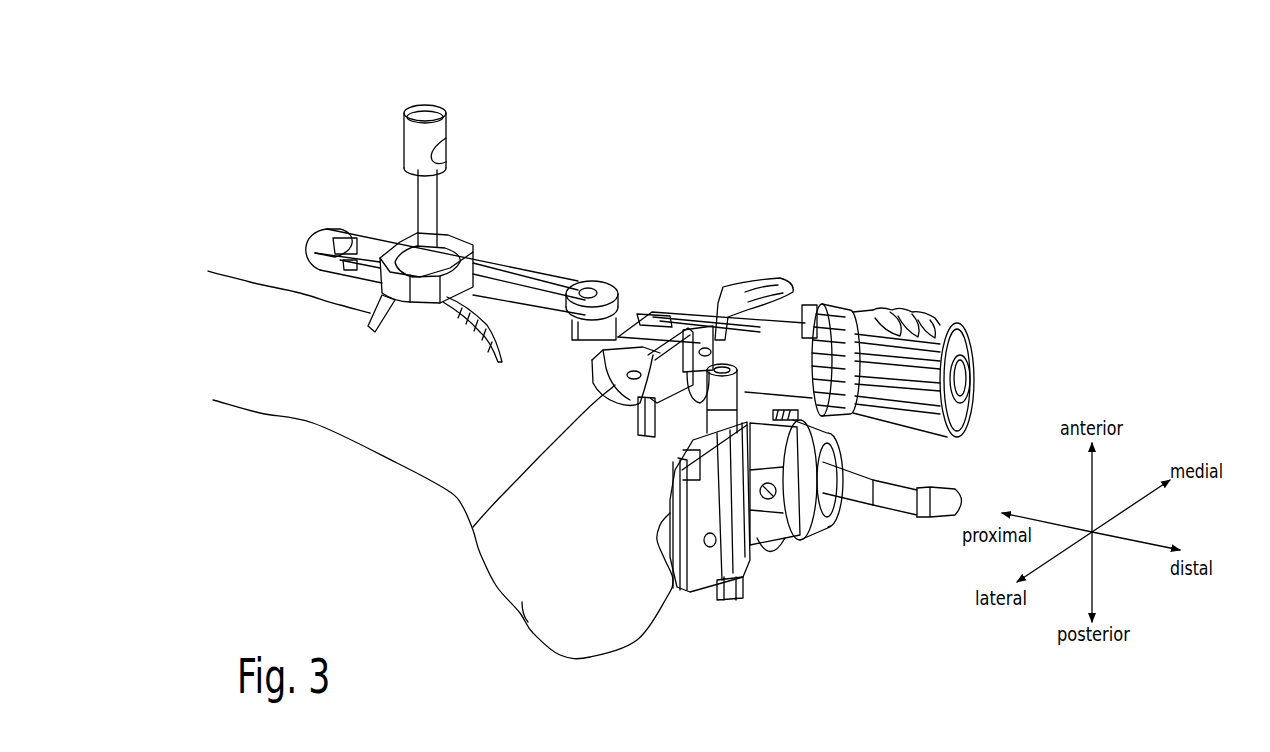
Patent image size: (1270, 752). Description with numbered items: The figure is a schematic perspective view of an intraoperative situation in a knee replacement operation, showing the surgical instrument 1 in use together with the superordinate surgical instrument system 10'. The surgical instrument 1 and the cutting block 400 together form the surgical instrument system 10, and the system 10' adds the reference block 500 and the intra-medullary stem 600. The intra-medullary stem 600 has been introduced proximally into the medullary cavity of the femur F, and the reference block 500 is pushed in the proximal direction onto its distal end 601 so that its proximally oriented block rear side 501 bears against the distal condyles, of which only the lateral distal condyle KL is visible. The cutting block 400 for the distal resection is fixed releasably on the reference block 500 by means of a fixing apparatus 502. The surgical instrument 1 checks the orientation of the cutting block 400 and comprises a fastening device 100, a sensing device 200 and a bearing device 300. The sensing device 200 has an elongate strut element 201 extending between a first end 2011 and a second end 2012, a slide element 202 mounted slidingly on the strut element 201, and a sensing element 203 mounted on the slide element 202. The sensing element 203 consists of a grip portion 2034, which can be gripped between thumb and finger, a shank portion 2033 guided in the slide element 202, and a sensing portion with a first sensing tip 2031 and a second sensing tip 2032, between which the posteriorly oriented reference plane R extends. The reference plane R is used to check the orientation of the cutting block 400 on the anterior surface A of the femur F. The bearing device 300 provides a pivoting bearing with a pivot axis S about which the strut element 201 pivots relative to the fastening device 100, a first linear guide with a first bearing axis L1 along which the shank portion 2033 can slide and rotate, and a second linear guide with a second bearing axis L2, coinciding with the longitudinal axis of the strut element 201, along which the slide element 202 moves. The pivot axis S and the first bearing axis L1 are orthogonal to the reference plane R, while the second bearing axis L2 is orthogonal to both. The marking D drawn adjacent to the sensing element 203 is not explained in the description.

The surgical instrument 1 is at (513, 197).
The surgical instrument system 10 is at (688, 175).
The surgical instrument system 10' is at (807, 106).
The fastening device 100 is at (643, 305).
The sensing device 200 is at (418, 261).
The strut element 201 is at (418, 249).
The slide element 202 is at (413, 243).
The sensing element 203 is at (430, 137).
The bearing device 300 is at (573, 263).
The cutting block 400 is at (473, 530).
The reference block 500 is at (756, 558).
The block rear side 501 is at (670, 593).
The fixing apparatus 502 is at (780, 260).
The intra-medullary stem 600 is at (892, 511).
The distal end 601 is at (853, 477).
The first end 2011 is at (605, 283).
The second end 2012 is at (333, 236).
The first sensing tip 2031 is at (370, 327).
The second sensing tip 2032 is at (498, 358).
The shank portion 2033 is at (438, 213).
The grip portion 2034 is at (447, 117).
The pivot axis S is at (590, 283).
The direction D is at (424, 107).
The first bearing axis L1 is at (427, 93).
The second bearing axis L2 is at (310, 230).
The femur F is at (350, 430).
The lateral distal condyle KL is at (600, 645).
The anterior surface A is at (415, 349).
The reference plane R is at (457, 330).